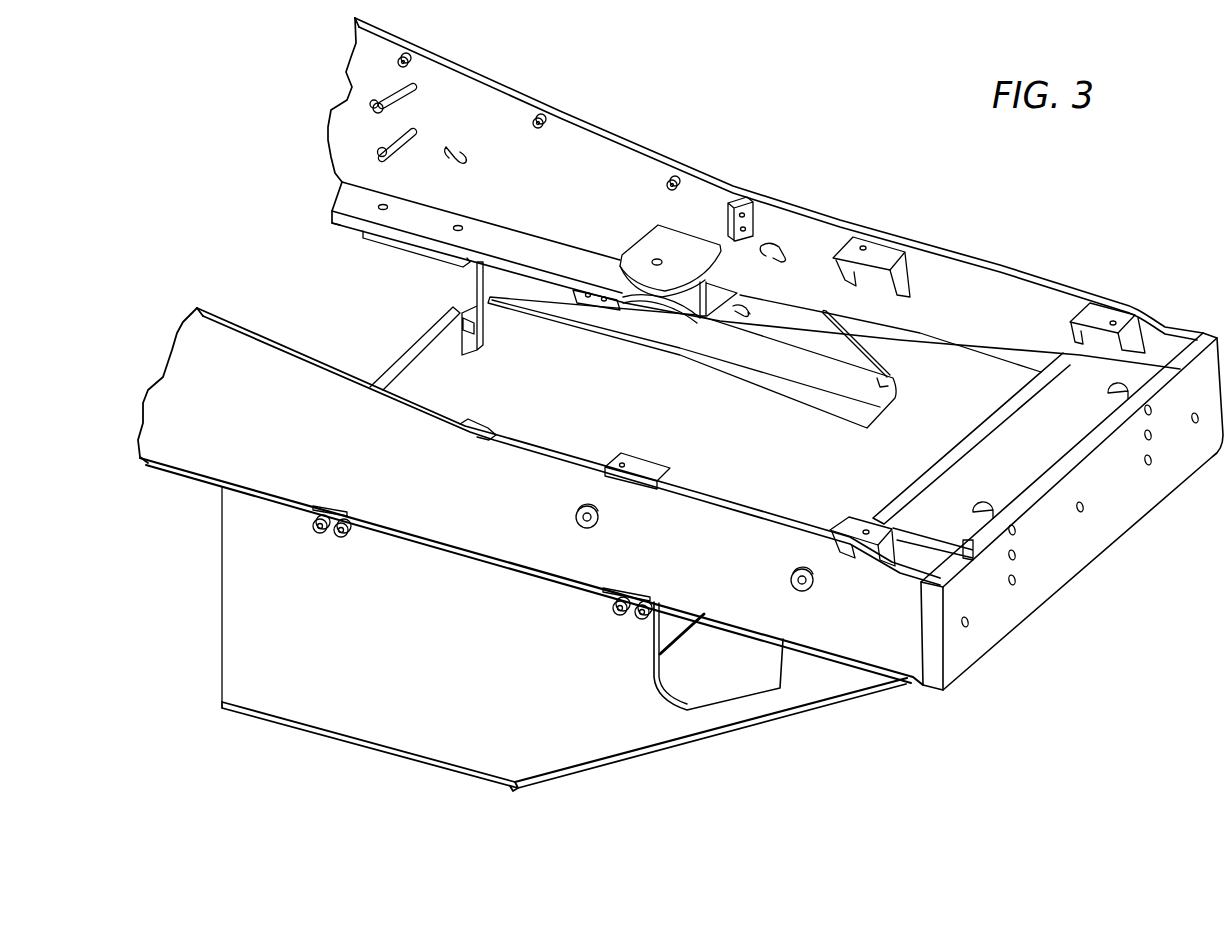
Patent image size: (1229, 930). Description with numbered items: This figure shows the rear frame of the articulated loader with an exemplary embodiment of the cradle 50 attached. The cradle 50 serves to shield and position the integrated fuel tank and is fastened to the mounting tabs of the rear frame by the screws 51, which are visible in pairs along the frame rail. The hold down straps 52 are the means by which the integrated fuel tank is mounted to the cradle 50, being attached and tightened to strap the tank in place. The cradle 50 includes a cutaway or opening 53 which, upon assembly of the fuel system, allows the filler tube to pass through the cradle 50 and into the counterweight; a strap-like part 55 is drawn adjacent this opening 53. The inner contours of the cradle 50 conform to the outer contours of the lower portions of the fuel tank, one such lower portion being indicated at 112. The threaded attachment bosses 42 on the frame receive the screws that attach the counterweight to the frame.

The threaded attachment bosses 42 is at (790, 582).
The cradle 50 is at (503, 699).
The screws 51 is at (317, 534).
The hold down straps 52 is at (707, 360).
The cutaway or opening 53 is at (750, 663).
The strap 55 is at (670, 630).
The lower portion of the integrated fuel tank 112 is at (373, 752).